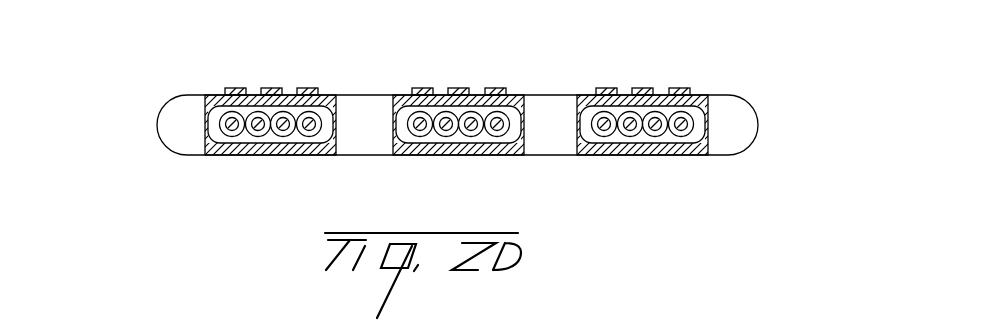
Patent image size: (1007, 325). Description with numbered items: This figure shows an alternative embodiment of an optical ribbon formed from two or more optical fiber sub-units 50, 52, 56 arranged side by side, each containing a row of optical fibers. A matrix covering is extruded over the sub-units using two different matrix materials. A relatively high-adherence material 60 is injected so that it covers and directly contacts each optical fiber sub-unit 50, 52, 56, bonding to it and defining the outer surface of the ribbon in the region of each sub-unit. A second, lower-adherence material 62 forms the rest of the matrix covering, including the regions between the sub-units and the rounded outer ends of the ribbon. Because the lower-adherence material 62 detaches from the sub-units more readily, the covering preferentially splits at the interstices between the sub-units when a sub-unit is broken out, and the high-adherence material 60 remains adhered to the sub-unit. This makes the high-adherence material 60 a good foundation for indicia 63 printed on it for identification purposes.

The optical fiber sub-unit 50 is at (255, 147).
The optical fiber sub-unit 52 is at (497, 147).
The optical fiber sub-unit 56 is at (652, 149).
The high-adherence material 60 is at (240, 92).
The lower-adherence material 62 is at (175, 128).
The indicia 63 is at (684, 91).